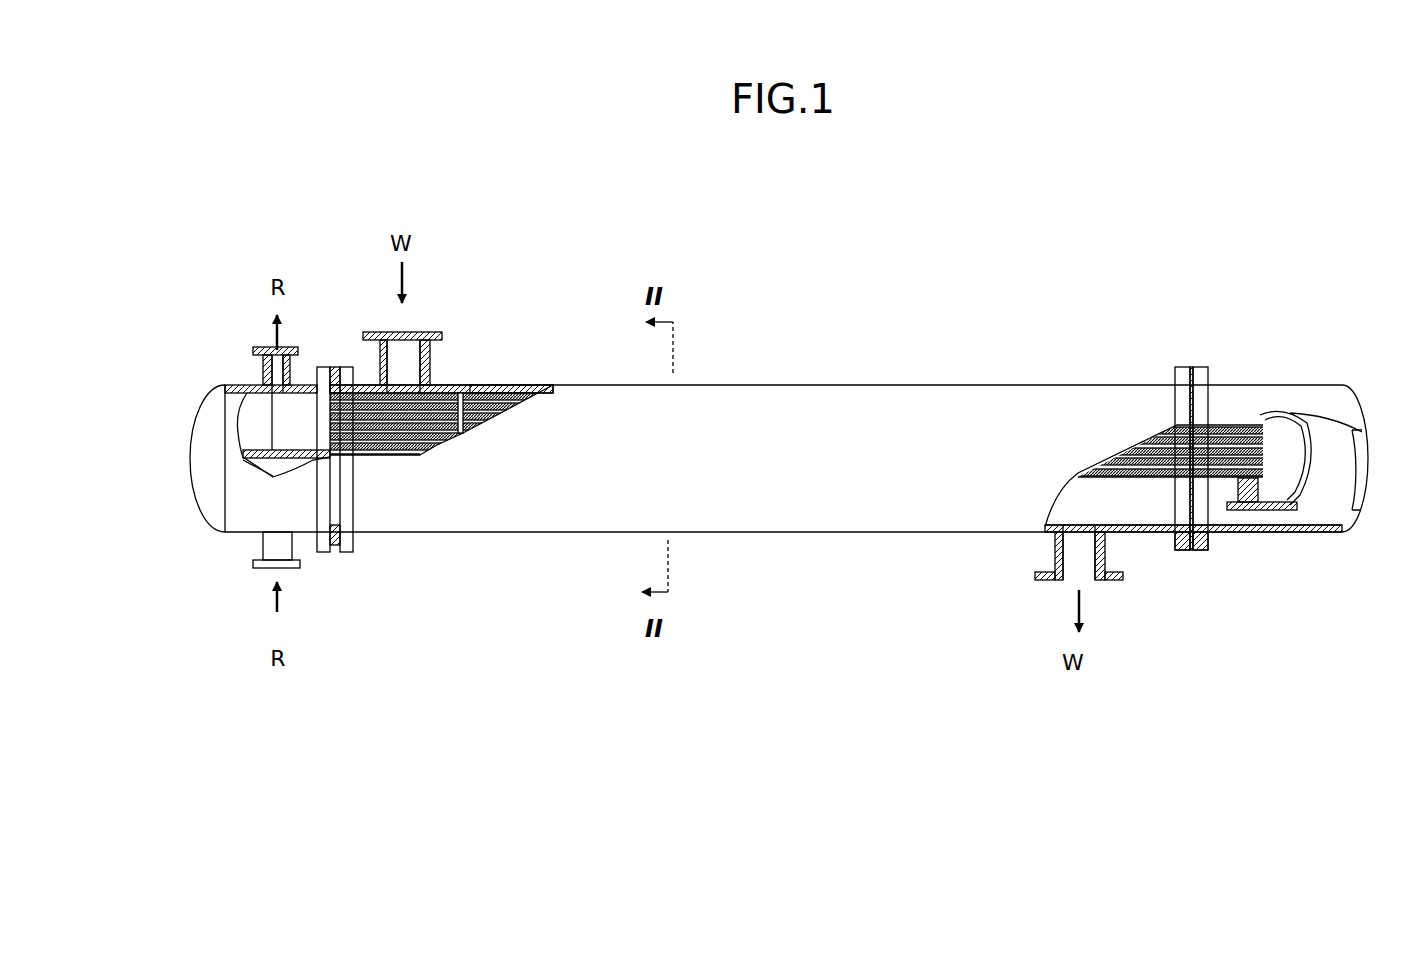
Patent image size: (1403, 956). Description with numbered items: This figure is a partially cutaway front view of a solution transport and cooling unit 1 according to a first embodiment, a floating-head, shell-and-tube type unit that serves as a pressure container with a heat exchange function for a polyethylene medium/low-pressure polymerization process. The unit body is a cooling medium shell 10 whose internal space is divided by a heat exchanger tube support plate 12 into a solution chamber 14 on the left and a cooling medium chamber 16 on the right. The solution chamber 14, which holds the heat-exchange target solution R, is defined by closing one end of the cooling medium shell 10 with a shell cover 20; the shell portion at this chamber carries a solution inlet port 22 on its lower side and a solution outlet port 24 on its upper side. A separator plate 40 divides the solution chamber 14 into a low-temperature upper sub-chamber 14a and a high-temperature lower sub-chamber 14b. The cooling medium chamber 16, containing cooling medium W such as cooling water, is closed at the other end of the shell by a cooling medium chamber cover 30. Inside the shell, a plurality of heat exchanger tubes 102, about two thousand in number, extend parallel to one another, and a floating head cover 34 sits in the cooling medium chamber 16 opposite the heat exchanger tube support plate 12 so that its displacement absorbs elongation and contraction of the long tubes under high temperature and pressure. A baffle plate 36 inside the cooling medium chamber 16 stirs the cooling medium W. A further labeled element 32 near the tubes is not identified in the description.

The solution transport and cooling unit 1 is at (1012, 258).
The cooling medium shell 10 is at (860, 385).
The heat exchanger tube support plate 12 is at (336, 515).
The solution chamber 14 is at (256, 408).
The low-temperature upper sub-chamber 14a is at (292, 407).
The high-temperature lower sub-chamber 14b is at (282, 472).
The cooling medium chamber 16 is at (507, 393).
The shell cover 20 is at (190, 497).
The solution inlet port 22 is at (258, 569).
The solution outlet port 24 is at (293, 392).
The cooling medium chamber cover 30 is at (1330, 400).
The heat transfer tubes 32 is at (443, 403).
The floating head cover 34 is at (1313, 480).
The baffle plate 36 is at (460, 405).
The separator plate 40 is at (282, 452).
The heat exchanger tubes 102 is at (407, 447).